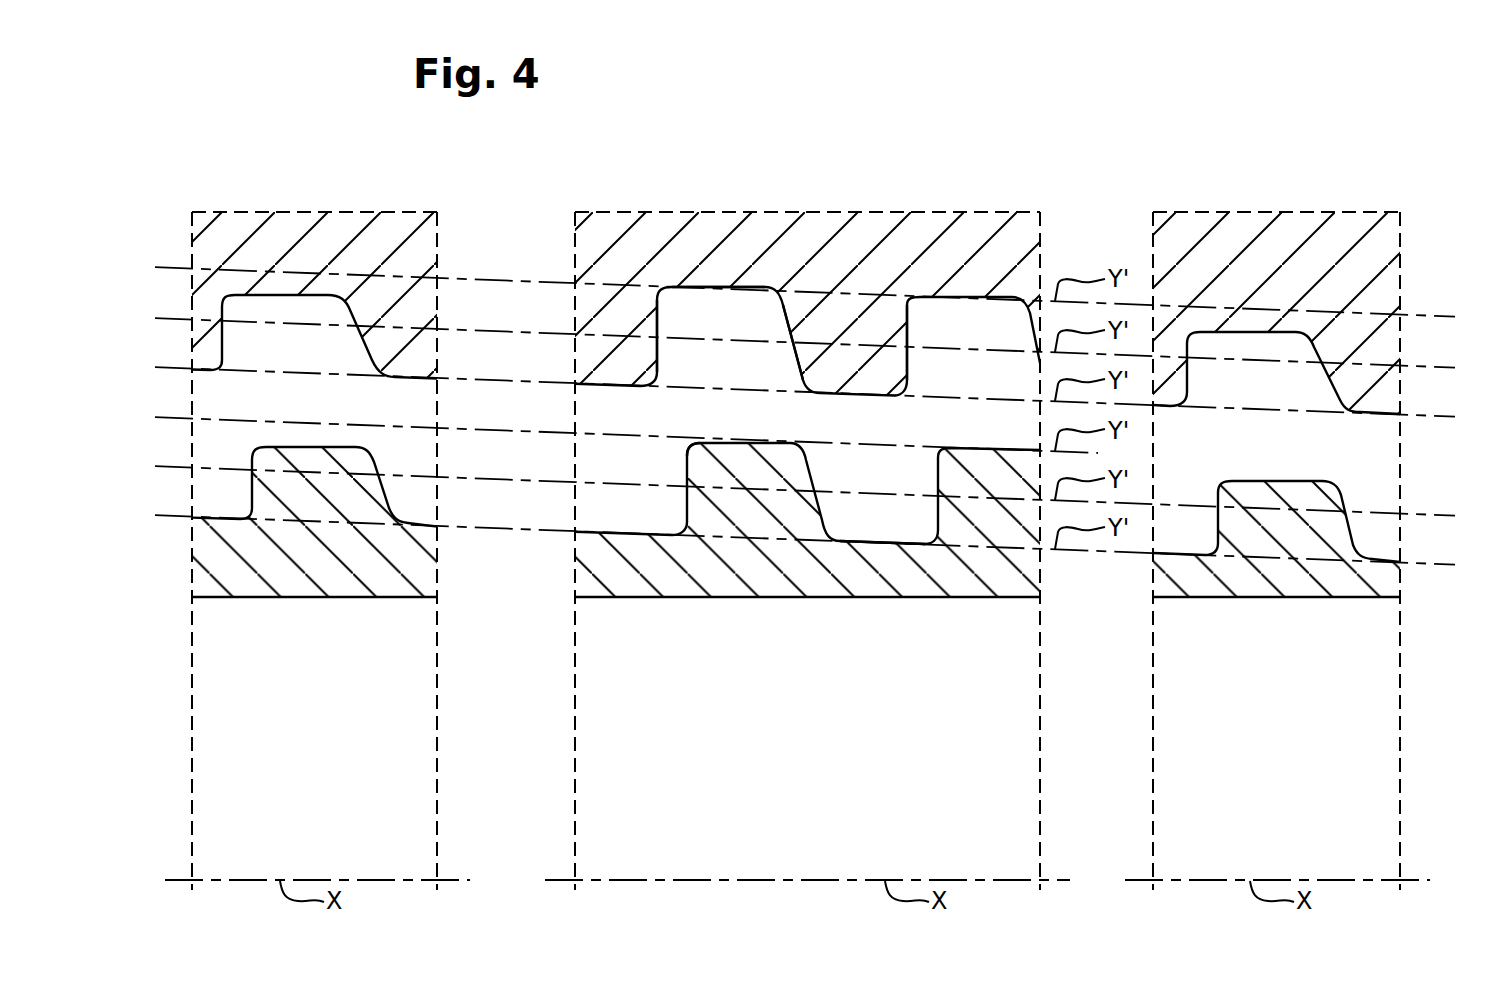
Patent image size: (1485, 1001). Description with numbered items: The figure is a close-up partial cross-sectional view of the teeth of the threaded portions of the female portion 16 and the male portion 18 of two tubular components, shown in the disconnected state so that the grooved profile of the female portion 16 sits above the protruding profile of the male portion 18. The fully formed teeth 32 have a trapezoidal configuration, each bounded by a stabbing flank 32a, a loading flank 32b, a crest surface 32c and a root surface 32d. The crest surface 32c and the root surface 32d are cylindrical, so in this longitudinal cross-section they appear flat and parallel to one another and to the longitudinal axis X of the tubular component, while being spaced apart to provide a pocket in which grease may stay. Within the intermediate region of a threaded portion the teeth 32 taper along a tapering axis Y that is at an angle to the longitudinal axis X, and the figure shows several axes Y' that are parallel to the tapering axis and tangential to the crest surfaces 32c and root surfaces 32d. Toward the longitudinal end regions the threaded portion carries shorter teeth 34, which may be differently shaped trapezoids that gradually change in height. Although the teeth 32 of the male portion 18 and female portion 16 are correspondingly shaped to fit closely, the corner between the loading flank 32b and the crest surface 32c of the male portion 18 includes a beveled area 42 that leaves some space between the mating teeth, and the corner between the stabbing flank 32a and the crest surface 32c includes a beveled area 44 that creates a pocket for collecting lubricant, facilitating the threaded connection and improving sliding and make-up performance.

The female portion 16 is at (291, 212).
The male portion 18 is at (350, 598).
The teeth 32 is at (543, 393).
The stabbing flank 32a is at (765, 300).
The loading flank 32b is at (910, 337).
The crest surface 32c is at (895, 450).
The root surface 32d is at (716, 290).
The shorter teeth 34 is at (203, 388).
The beveled area 42 is at (677, 425).
The beveled area 44 is at (778, 377).